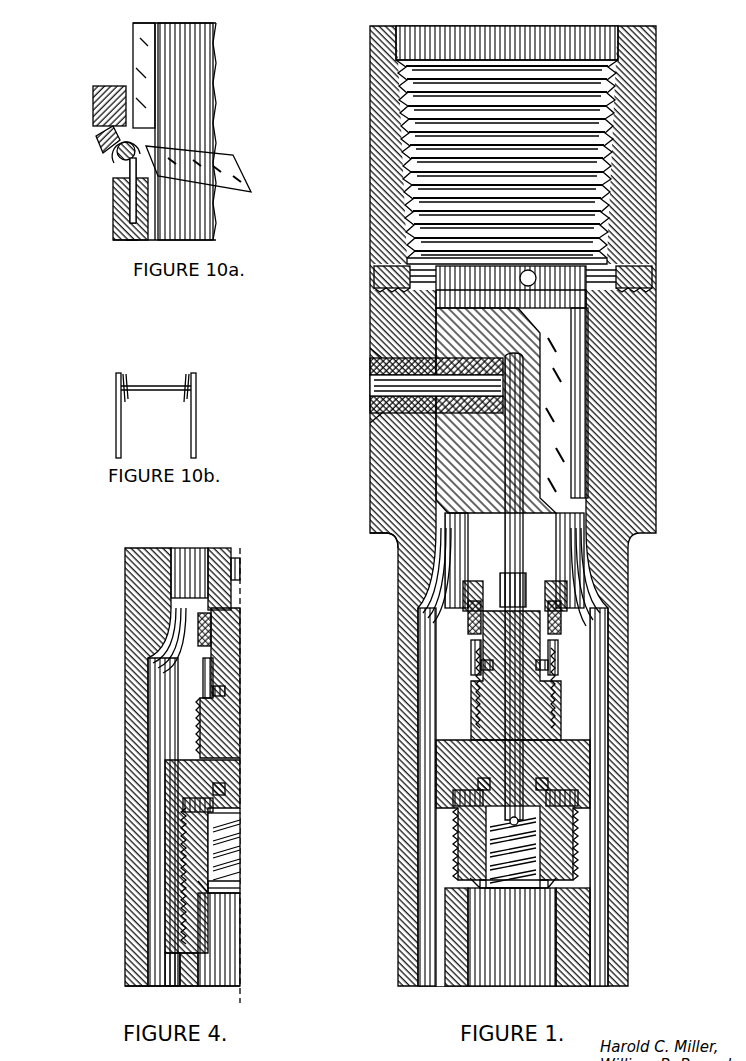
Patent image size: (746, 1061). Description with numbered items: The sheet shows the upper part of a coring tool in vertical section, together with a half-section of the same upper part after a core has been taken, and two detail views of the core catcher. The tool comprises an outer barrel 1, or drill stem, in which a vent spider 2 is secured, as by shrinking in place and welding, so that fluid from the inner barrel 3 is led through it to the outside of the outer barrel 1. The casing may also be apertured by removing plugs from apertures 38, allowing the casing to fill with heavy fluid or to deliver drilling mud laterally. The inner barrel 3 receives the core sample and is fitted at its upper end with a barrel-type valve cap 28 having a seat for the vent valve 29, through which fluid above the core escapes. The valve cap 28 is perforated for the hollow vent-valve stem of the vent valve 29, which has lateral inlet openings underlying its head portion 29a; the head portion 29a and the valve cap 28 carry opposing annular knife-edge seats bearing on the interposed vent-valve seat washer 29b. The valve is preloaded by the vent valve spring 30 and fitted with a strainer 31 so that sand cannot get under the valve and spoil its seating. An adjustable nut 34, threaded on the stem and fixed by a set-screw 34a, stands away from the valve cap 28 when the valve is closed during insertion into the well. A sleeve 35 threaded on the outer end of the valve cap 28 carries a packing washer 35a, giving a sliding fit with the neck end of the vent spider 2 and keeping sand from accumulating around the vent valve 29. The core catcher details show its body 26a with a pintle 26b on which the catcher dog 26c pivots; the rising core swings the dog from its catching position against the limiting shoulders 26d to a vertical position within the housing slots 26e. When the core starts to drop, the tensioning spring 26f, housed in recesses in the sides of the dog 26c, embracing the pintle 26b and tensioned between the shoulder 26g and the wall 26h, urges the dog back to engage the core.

In FIG. 1, the outer barrel 1 is at (626, 333).
In FIG. 4, the outer barrel 1 is at (182, 775).
In FIG. 1, the vent spider 2 is at (422, 360).
In FIG. 1, the inner barrel 3 is at (322, 918).
In FIG. 4, the inner barrel 3 is at (180, 955).
In FIG. 1, the valve cap 28 is at (325, 716).
In FIG. 4, the valve cap 28 is at (195, 762).
In FIG. 1, the vent valve 29 is at (325, 660).
In FIG. 4, the vent valve 29 is at (215, 690).
In FIG. 1, the head portion 29a is at (335, 748).
In FIG. 4, the head portion 29a is at (228, 790).
In FIG. 1, the vent-valve seat washer 29b is at (290, 748).
In FIG. 4, the vent-valve seat washer 29b is at (210, 790).
In FIG. 1, the vent valve spring 30 is at (325, 778).
In FIG. 4, the vent valve spring 30 is at (215, 815).
In FIG. 1, the strainer 31 is at (325, 822).
In FIG. 4, the strainer 31 is at (228, 870).
In FIG. 1, the adjustable nut 34 is at (322, 627).
In FIG. 4, the adjustable nut 34 is at (215, 657).
In FIG. 1, the set-screw 34a is at (470, 662).
In FIG. 4, the set-screw 34a is at (220, 610).
In FIG. 1, the sleeve 35 is at (322, 578).
In FIG. 4, the sleeve 35 is at (205, 594).
In FIG. 1, the packing washer 35a is at (632, 550).
In FIG. 1, the apertures 38 is at (512, 268).
In FIG. 10a, the core catcher body 26a is at (192, 56).
In FIG. 10a, the pintle 26b is at (110, 150).
In FIG. 10a, the catcher dog 26c is at (196, 156).
In FIG. 10a, the limiting shoulders 26d is at (86, 92).
In FIG. 10a, the housing slots 26e is at (140, 50).
In FIG. 10a, the tensioning spring 26f is at (124, 200).
In FIG. 10b, the tensioning spring 26f is at (145, 376).
In FIG. 10a, the shoulder 26g is at (102, 133).
In FIG. 10a, the wall 26h is at (126, 233).